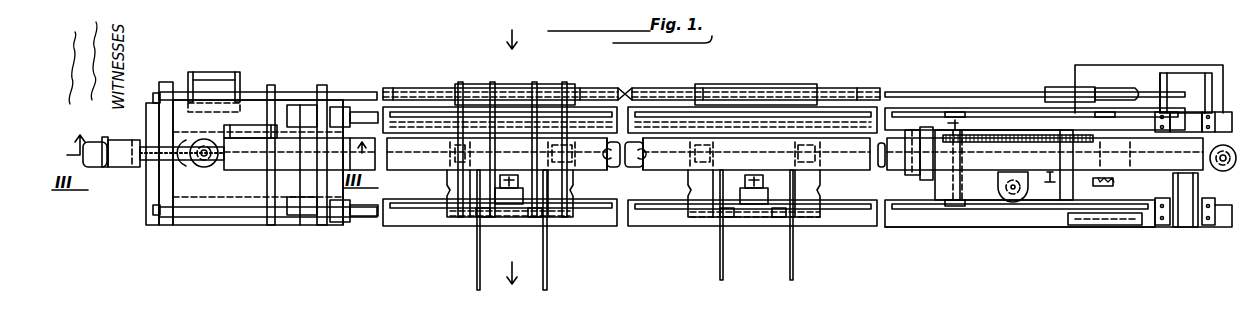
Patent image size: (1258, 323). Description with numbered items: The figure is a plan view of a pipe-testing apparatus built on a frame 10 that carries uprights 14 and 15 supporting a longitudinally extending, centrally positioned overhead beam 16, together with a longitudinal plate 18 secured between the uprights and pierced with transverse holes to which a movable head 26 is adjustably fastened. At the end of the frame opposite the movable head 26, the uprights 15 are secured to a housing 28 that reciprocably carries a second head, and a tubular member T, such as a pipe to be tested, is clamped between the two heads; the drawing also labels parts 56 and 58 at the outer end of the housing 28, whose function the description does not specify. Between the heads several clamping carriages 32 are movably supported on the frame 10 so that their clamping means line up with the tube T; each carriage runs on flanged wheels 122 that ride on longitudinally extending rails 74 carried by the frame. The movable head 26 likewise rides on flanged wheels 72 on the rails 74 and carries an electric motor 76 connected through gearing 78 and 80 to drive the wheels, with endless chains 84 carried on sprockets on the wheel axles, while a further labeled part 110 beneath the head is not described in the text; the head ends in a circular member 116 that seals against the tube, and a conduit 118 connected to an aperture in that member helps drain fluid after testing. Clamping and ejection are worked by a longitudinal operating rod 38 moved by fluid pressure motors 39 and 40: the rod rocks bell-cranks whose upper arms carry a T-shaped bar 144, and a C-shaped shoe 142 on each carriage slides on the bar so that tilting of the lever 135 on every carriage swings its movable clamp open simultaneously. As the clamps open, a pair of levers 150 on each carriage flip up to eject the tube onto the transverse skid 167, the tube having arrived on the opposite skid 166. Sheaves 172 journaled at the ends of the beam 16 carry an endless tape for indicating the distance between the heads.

The frame 10 is at (1232, 112).
The uprights 14 is at (1190, 172).
The uprights 15 is at (245, 174).
The overhead beam 16 is at (652, 172).
The plate 18 is at (640, 144).
The movable head 26 is at (997, 198).
The housing 28 is at (260, 198).
The clamping carriage 32 is at (460, 222).
The operating rod 38 is at (632, 92).
The fluid pressure motor 39 is at (1186, 73).
The fluid pressure motor 40 is at (232, 72).
The upright post 56 is at (148, 175).
The hand crank shaft 58 is at (130, 165).
The flanged wheels 72 is at (955, 112).
The rails 74 is at (590, 114).
The electric motor 76 is at (1120, 122).
The gearing 78 is at (1110, 226).
The gearing 80 is at (1116, 183).
The endless chains 84 is at (1028, 132).
The pulley 110 is at (1013, 195).
The circular sealing member 116 is at (915, 172).
The conduit 118 is at (950, 125).
The flanged wheels 122 is at (450, 128).
The lever 135 is at (460, 84).
The C-shaped shoe 142 is at (478, 84).
The T-shaped bar 144 is at (425, 80).
The ejecting levers 150 is at (470, 176).
The transverse skid 166 is at (493, 84).
The transverse skid 167 is at (540, 250).
The sheaves 172 is at (210, 166).
The tubular member T is at (620, 177).